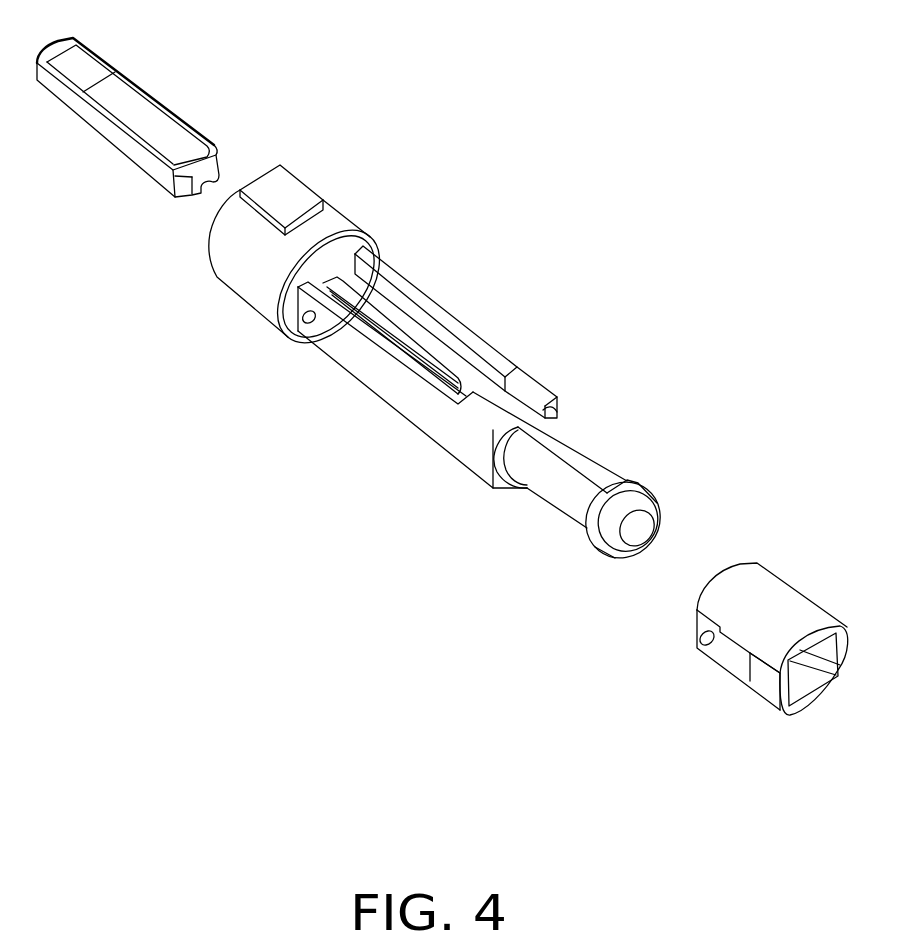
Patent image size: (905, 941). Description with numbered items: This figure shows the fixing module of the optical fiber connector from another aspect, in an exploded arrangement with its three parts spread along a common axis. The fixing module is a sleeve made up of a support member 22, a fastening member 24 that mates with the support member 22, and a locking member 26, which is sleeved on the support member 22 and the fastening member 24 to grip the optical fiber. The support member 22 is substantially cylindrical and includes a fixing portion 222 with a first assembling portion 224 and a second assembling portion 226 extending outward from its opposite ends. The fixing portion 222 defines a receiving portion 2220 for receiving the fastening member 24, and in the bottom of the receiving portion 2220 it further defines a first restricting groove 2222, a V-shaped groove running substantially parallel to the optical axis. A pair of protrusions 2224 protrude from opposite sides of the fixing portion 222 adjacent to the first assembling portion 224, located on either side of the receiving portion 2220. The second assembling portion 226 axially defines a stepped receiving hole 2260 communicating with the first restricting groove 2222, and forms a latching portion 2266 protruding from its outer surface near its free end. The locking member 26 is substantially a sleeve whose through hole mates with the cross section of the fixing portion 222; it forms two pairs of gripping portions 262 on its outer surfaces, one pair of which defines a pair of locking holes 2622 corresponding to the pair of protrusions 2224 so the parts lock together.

The support member 22 is at (440, 391).
The fastening member 24 is at (90, 143).
The locking member 26 is at (704, 666).
The fixing portion 222 is at (380, 375).
The first assembling portion 224 is at (240, 272).
The second assembling portion 226 is at (612, 504).
The gripping portions 262 is at (707, 653).
The receiving portion 2220 is at (440, 333).
The first restricting groove 2222 is at (352, 292).
The protrusions 2224 is at (307, 327).
The receiving hole 2260 is at (640, 524).
The latching portion 2266 is at (605, 568).
The locking holes 2622 is at (700, 638).